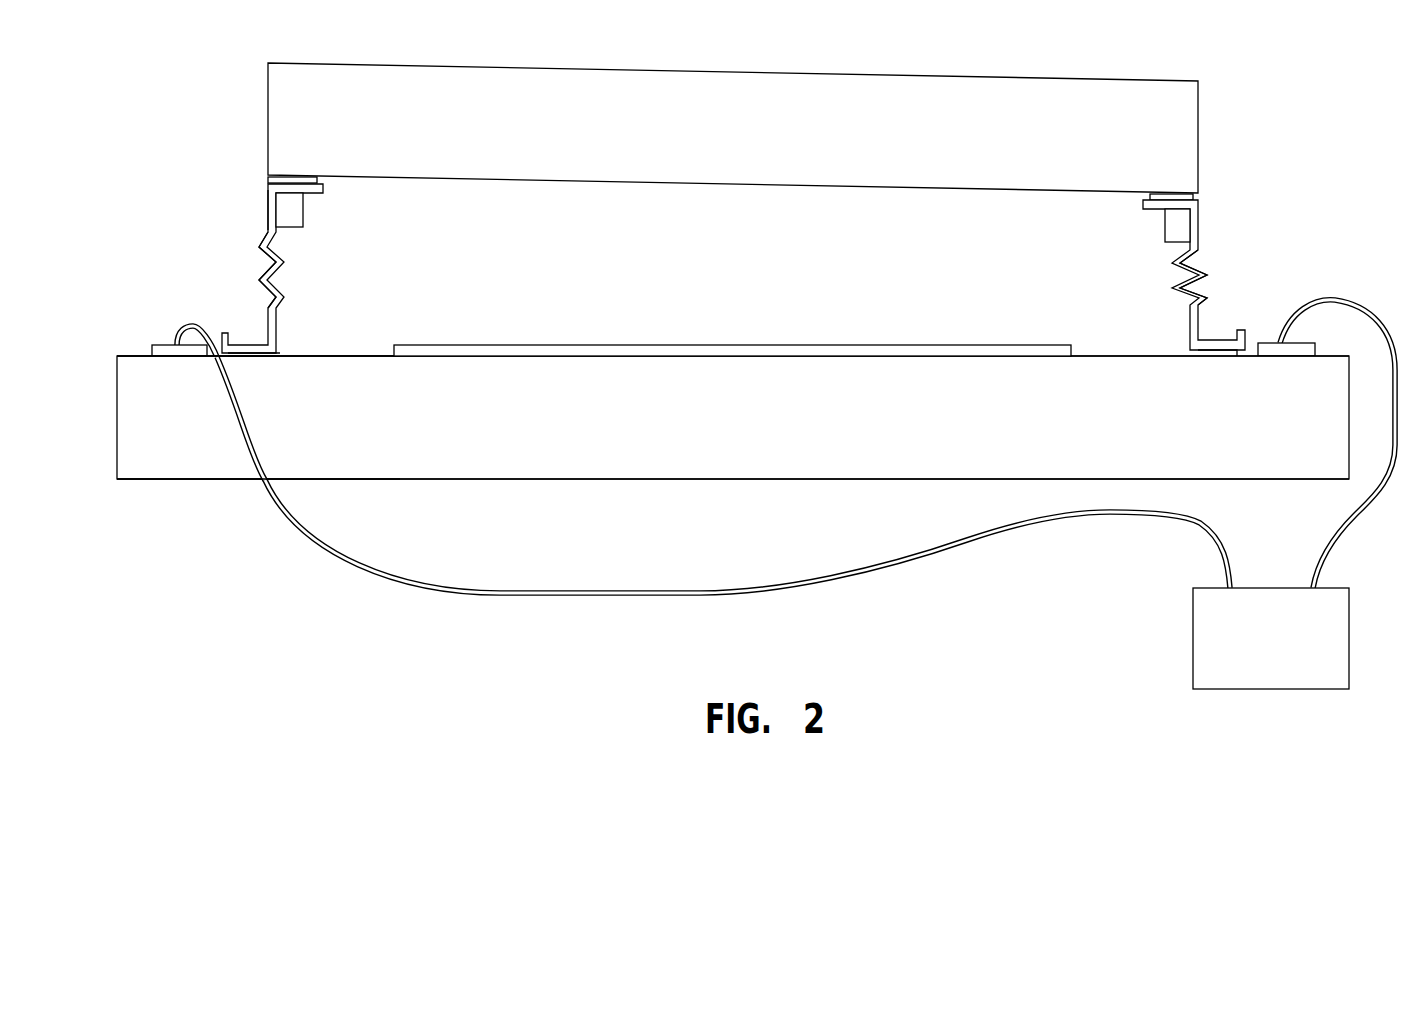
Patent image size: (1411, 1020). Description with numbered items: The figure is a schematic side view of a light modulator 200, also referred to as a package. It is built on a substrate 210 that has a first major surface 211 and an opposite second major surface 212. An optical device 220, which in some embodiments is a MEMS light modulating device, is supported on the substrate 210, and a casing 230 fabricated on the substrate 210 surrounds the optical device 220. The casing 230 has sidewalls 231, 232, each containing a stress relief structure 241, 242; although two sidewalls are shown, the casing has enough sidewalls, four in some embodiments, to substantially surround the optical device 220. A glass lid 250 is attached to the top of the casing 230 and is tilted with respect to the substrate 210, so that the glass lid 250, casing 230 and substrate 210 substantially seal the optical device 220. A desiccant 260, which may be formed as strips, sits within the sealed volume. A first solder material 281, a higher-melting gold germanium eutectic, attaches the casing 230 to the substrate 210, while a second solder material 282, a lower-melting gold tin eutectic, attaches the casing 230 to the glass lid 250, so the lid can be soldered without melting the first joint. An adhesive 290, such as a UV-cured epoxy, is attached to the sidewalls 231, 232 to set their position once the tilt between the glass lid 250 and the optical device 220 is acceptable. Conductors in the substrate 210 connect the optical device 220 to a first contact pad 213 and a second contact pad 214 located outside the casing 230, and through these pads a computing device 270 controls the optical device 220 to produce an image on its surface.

The light modulator 200 is at (1232, 117).
The substrate 210 is at (115, 419).
The first major surface 211 is at (120, 356).
The second major surface 212 is at (198, 484).
The first contact pad 213 is at (172, 344).
The second contact pad 214 is at (1272, 343).
The optical device 220 is at (736, 344).
The casing 230 is at (266, 228).
The sidewall 231 is at (268, 206).
The sidewall 232 is at (1204, 226).
The stress relief structure 241 is at (265, 280).
The stress relief structure 242 is at (1210, 287).
The glass lid 250 is at (1150, 87).
The desiccant 260 is at (306, 207).
The computing device 270 is at (1352, 638).
The first solder material 281 is at (277, 354).
The second solder material 282 is at (268, 180).
The adhesive 290 is at (264, 298).